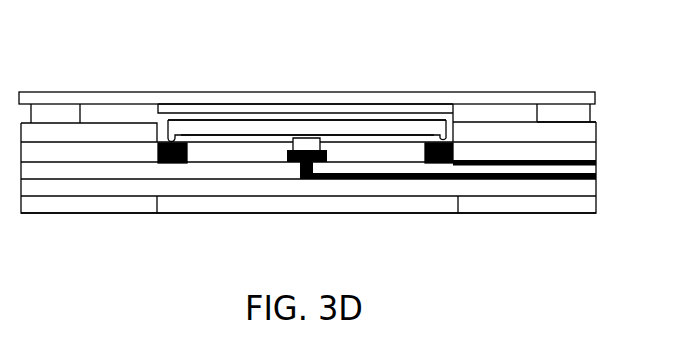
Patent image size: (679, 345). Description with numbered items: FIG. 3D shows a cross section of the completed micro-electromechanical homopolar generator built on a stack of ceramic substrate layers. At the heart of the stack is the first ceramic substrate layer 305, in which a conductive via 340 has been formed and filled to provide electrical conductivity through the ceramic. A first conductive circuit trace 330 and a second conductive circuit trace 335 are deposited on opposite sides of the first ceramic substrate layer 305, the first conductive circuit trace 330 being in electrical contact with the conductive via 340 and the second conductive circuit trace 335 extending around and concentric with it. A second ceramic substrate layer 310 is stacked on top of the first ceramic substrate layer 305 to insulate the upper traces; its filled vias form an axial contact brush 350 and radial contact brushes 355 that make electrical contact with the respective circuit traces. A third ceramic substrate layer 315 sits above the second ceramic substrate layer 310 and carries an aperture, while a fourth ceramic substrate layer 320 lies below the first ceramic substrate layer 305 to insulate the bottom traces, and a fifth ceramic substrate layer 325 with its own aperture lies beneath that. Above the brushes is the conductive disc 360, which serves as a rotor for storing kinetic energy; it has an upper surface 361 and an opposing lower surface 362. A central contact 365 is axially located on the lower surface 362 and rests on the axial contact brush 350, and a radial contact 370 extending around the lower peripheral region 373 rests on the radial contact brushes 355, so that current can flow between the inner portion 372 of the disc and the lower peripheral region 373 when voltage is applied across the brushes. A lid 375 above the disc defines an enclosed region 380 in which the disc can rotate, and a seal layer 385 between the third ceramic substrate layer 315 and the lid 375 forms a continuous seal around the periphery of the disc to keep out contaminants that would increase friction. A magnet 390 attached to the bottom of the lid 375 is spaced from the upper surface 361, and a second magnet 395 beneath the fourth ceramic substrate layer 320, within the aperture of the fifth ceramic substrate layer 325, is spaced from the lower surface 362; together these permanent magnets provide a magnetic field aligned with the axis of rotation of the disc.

The enclosed region 380 is at (123, 113).
The lid 375 is at (552, 98).
The seal layer 385 is at (596, 106).
The conductive disc 360 is at (205, 115).
The magnet 390 is at (352, 107).
The upper surface 361 is at (383, 115).
The inner portion 372 is at (280, 121).
The lower surface 362 is at (223, 137).
The radial contact 370 is at (176, 119).
The lower peripheral region 373 is at (450, 104).
The central contact 365 is at (307, 137).
The third ceramic substrate layer 315 is at (592, 131).
The second ceramic substrate layer 310 is at (592, 150).
The first ceramic substrate layer 305 is at (592, 168).
The fourth ceramic substrate layer 320 is at (592, 186).
The fifth ceramic substrate layer 325 is at (592, 204).
The magnet 395 is at (342, 203).
The radial contact brush 355 is at (173, 165).
The axial contact brush 350 is at (290, 163).
The conductive via 340 is at (306, 180).
The first conductive circuit trace 330 is at (388, 180).
The second conductive circuit trace 335 is at (478, 158).